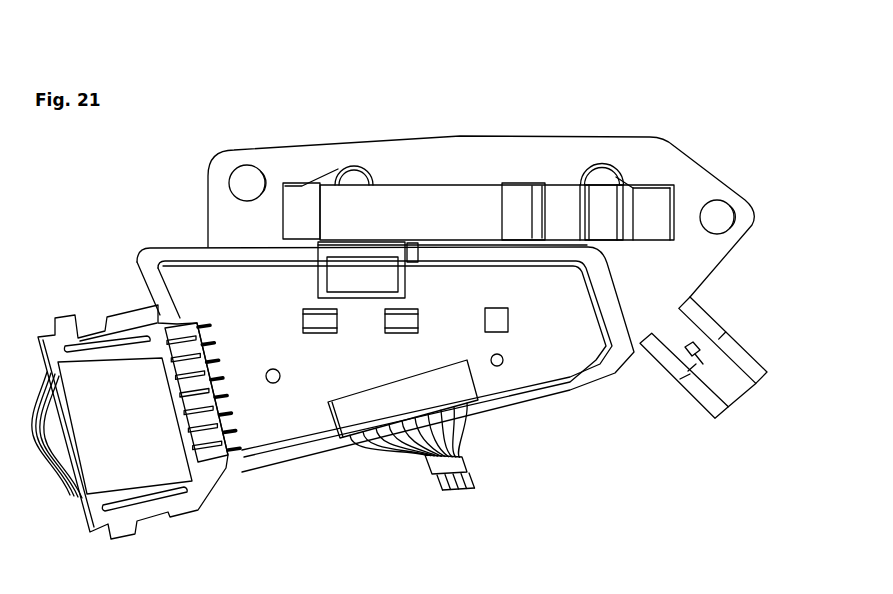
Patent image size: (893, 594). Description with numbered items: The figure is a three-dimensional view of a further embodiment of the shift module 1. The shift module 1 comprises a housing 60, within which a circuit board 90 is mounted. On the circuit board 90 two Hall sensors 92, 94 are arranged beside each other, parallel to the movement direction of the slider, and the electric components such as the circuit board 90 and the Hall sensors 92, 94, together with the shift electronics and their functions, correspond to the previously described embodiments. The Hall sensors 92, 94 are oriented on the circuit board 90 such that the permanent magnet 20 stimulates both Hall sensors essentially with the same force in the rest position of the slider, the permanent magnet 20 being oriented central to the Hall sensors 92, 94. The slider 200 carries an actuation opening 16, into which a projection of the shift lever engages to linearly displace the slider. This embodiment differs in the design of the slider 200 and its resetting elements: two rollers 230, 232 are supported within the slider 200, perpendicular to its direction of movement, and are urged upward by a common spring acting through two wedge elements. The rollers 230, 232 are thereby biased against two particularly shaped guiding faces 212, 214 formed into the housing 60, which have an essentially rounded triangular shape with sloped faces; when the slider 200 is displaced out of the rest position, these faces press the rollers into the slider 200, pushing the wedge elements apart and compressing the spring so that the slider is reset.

The shift module 1 is at (103, 169).
The actuation opening 16 is at (563, 203).
The permanent magnet 20 is at (337, 273).
The housing 60 is at (258, 166).
The circuit board 90 is at (562, 338).
The Hall sensor 92 is at (318, 317).
The Hall sensor 94 is at (403, 317).
The slider 200 is at (442, 208).
The guiding face 212 is at (317, 183).
The guiding face 214 is at (632, 185).
The roller 230 is at (353, 176).
The roller 232 is at (605, 180).